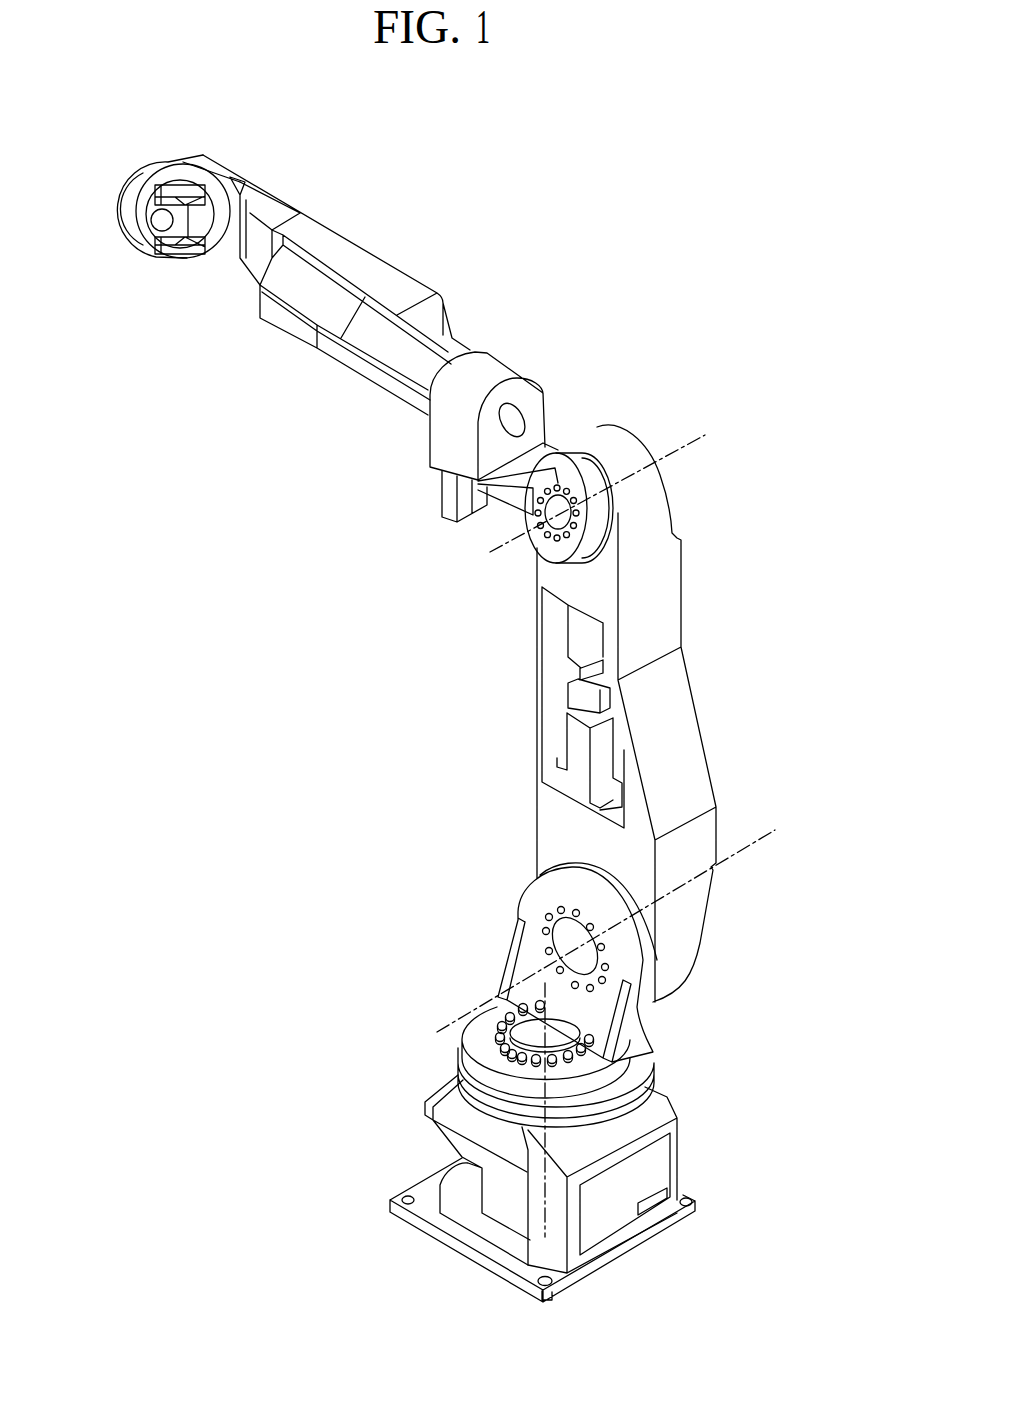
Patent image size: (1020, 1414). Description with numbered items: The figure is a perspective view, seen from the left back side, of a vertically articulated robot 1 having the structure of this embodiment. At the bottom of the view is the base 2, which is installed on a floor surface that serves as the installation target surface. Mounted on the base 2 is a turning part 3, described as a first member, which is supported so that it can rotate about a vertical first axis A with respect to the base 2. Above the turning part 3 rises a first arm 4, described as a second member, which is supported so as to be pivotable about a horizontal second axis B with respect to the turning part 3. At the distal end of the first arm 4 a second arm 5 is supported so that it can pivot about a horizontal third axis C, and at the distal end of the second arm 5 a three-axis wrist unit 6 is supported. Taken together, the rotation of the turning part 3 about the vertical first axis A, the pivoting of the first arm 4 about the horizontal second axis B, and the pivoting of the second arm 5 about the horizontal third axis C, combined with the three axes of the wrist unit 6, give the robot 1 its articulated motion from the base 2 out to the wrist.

The robot 1 is at (700, 172).
The base 2 is at (494, 1234).
The turning part 3 is at (650, 1042).
The first arm 4 is at (705, 728).
The second arm 5 is at (519, 350).
The three-axis wrist unit 6 is at (115, 166).
The first axis A is at (545, 1213).
The second axis B is at (452, 1015).
The third axis C is at (676, 448).